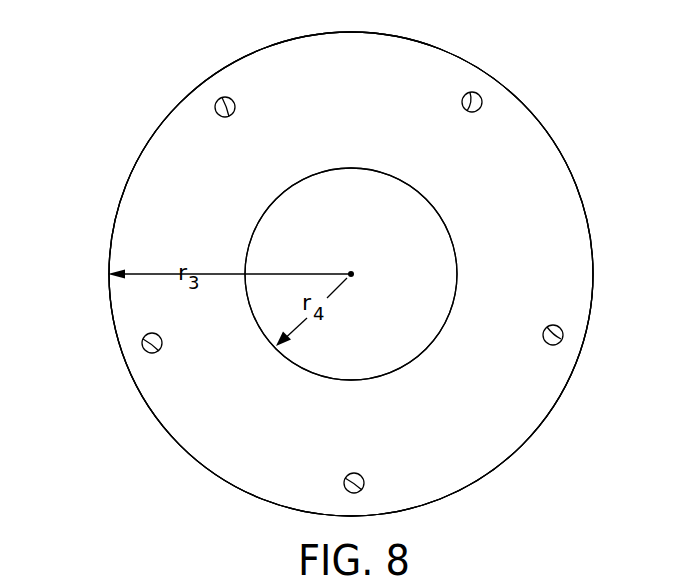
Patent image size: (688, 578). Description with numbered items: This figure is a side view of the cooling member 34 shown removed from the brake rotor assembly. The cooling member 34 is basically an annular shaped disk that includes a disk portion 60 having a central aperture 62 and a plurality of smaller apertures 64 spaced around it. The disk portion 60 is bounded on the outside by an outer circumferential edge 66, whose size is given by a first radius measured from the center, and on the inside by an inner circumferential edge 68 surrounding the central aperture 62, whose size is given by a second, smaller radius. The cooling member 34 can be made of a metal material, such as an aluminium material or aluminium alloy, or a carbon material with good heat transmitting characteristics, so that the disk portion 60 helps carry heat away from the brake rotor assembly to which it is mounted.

The cooling member 34 is at (106, 124).
The disk portion 60 is at (542, 229).
The central aperture 62 is at (365, 169).
The apertures 64 is at (234, 114).
The outer circumferential edge 66 is at (553, 137).
The inner circumferential edge 68 is at (430, 344).